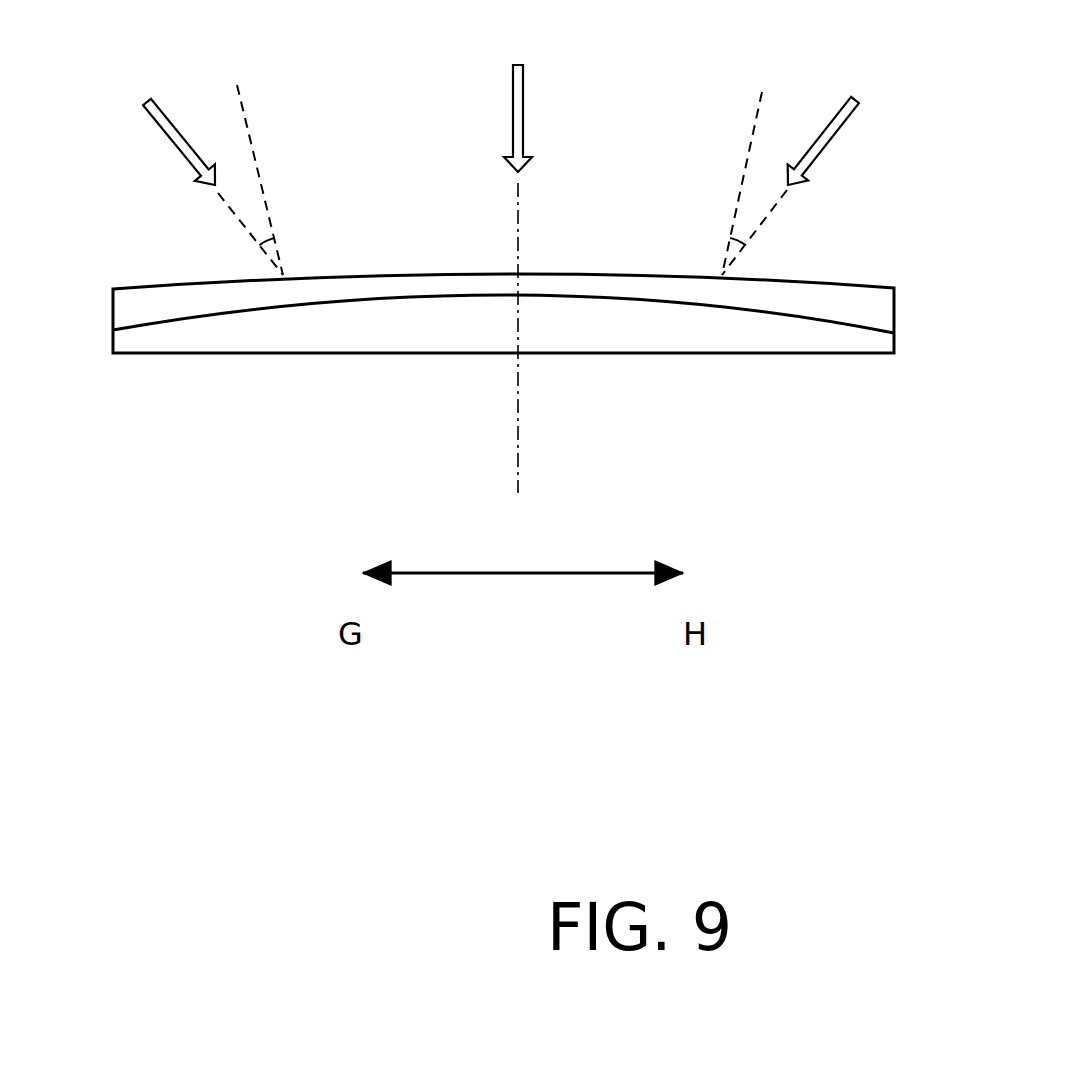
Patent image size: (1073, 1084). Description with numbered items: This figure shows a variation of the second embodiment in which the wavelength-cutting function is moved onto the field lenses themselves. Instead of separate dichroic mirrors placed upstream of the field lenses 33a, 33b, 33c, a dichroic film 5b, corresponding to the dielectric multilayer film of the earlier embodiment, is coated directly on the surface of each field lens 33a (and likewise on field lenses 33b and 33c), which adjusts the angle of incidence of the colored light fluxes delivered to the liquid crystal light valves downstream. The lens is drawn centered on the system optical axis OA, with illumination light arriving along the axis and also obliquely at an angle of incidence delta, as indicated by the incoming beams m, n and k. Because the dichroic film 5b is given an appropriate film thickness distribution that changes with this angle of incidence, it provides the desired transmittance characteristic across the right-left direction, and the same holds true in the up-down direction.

The dichroic film 5b is at (573, 380).
The field lens 33a is at (573, 422).
The field lens 33b is at (573, 422).
The field lens 33c is at (740, 343).
The system optical axis OA is at (519, 407).
The light beam m is at (512, 95).
The light beam n is at (172, 147).
The light beam k is at (827, 148).